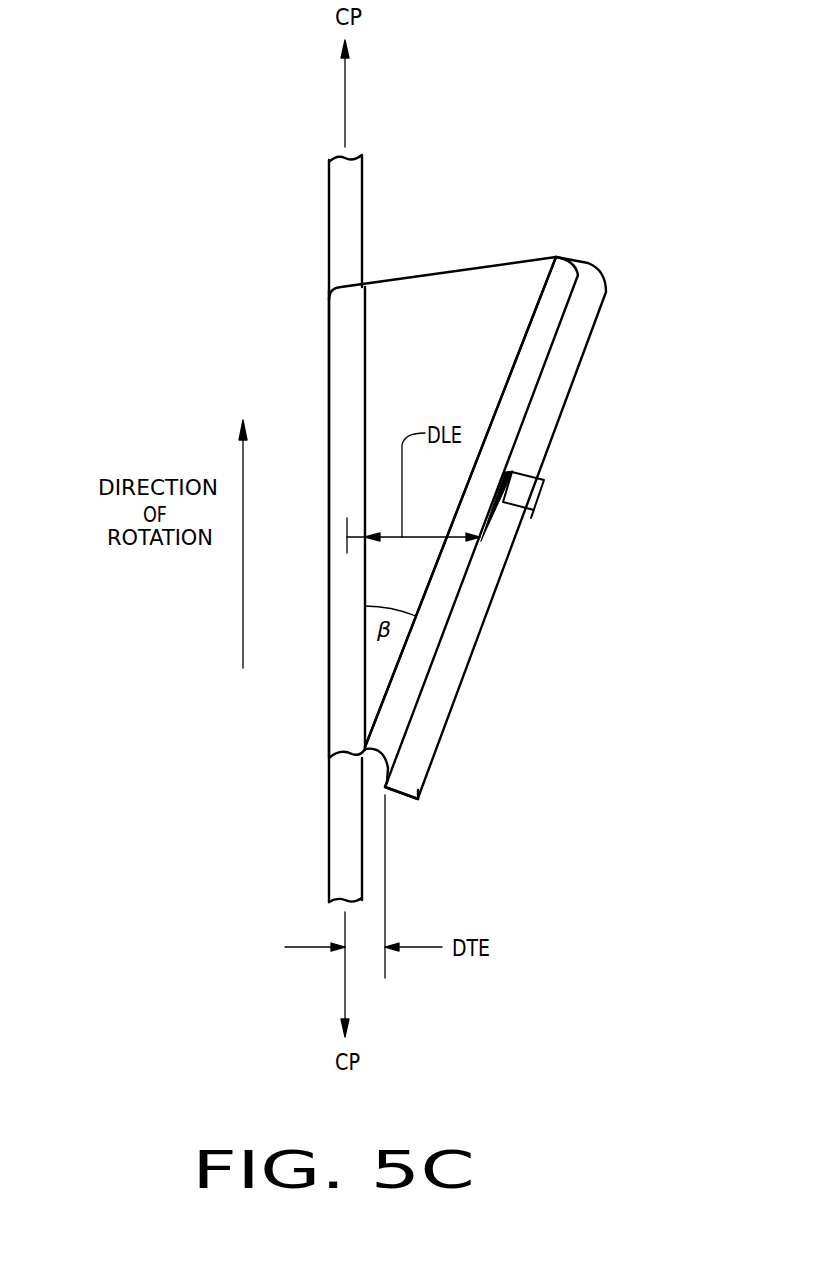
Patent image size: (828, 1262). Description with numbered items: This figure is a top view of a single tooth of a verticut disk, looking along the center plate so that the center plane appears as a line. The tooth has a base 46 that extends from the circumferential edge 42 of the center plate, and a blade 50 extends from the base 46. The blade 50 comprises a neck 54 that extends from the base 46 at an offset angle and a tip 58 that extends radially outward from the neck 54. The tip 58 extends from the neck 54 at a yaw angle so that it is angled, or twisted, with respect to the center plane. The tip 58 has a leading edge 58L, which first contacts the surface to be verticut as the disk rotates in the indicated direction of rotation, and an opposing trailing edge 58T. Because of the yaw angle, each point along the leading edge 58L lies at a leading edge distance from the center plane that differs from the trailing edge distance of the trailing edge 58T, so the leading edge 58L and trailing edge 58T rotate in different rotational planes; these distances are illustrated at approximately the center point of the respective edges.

The circumferential edge 42 is at (329, 241).
The base 46 is at (330, 380).
The blade 50 is at (545, 557).
The neck 54 is at (511, 305).
The tip 58 is at (498, 600).
The leading edge 58L is at (548, 403).
The trailing edge 58T is at (402, 793).